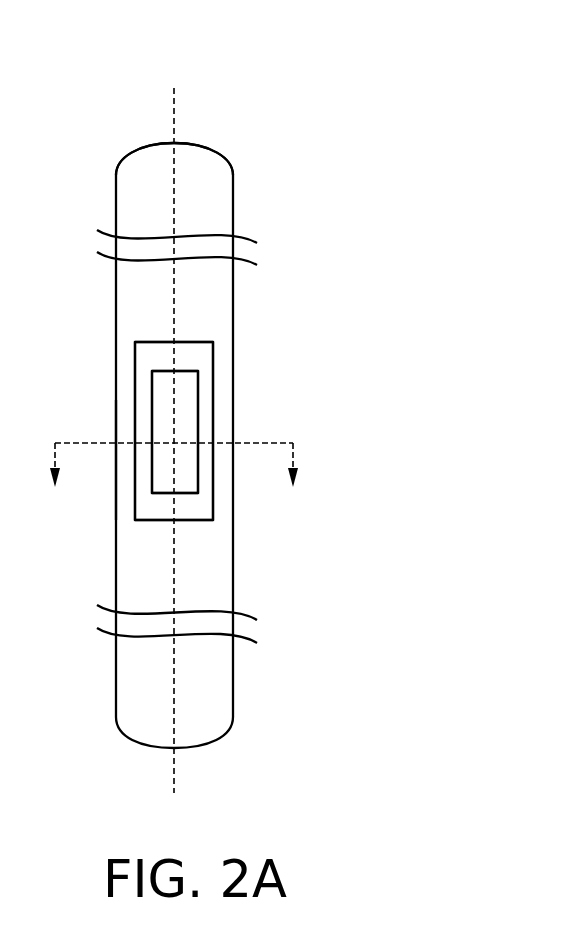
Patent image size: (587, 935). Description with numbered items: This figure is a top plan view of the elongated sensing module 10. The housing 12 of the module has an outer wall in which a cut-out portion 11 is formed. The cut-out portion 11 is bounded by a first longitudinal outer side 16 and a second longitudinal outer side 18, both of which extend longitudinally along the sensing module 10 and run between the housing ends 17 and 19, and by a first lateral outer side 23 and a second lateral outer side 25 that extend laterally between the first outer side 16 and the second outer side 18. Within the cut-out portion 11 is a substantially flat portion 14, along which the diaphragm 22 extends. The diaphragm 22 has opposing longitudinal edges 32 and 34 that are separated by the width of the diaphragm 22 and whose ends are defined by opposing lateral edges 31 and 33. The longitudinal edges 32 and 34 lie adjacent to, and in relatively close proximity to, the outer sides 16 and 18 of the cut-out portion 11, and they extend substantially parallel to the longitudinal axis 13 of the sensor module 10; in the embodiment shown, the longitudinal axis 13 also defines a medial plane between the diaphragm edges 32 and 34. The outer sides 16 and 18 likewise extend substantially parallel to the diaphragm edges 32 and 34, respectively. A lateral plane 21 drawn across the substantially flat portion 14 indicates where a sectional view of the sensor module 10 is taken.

The sensing module 10 is at (188, 29).
The cut-out portion 11 is at (125, 467).
The housing 12 is at (147, 148).
The longitudinal axis 13 is at (176, 127).
The substantially flat portion 14 is at (193, 356).
The first longitudinal outer side 16 is at (135, 372).
The housing end 17 is at (217, 148).
The second longitudinal outer side 18 is at (213, 387).
The housing end 19 is at (150, 745).
The lateral plane 21 is at (277, 443).
The diaphragm 22 is at (190, 463).
The first lateral outer side 23 is at (158, 521).
The second lateral outer side 25 is at (190, 342).
The lateral edge 31 is at (167, 371).
The longitudinal edge 32 is at (152, 440).
The lateral edge 33 is at (183, 494).
The longitudinal edge 34 is at (198, 429).